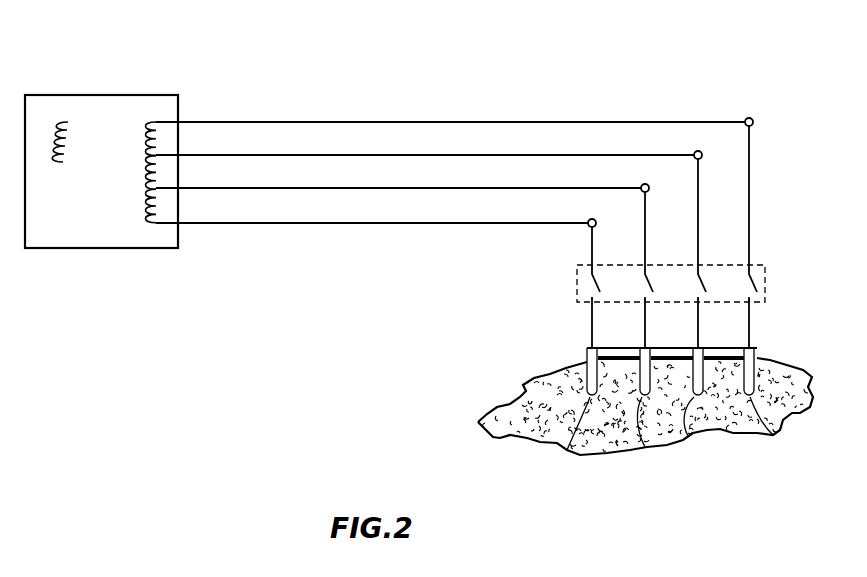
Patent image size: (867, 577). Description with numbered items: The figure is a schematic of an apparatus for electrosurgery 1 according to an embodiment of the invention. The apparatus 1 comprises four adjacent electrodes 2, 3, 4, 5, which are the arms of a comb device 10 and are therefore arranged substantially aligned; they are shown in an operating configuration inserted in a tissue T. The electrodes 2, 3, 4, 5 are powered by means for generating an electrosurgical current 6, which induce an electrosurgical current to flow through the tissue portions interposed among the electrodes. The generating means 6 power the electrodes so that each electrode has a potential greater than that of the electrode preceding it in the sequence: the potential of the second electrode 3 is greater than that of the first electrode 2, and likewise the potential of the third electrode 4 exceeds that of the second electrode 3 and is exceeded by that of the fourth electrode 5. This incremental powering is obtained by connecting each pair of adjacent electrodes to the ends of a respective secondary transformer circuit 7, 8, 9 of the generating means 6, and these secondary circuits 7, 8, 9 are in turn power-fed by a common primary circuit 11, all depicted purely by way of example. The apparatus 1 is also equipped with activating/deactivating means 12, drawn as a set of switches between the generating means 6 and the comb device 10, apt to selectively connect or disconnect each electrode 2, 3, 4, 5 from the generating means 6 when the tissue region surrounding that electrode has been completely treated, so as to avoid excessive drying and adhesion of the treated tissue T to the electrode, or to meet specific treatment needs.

The apparatus for electrosurgery 1 is at (654, 87).
The first electrode 2 is at (550, 445).
The second electrode 3 is at (641, 447).
The third electrode 4 is at (700, 437).
The fourth electrode 5 is at (767, 435).
The means for generating an electrosurgical current 6 is at (78, 262).
The secondary transformer circuit 7 is at (140, 206).
The secondary transformer circuit 8 is at (140, 181).
The secondary transformer circuit 9 is at (140, 140).
The comb device 10 is at (784, 352).
The primary circuit 11 is at (62, 120).
The activating/deactivating means 12 is at (577, 288).
The tissue T is at (500, 405).